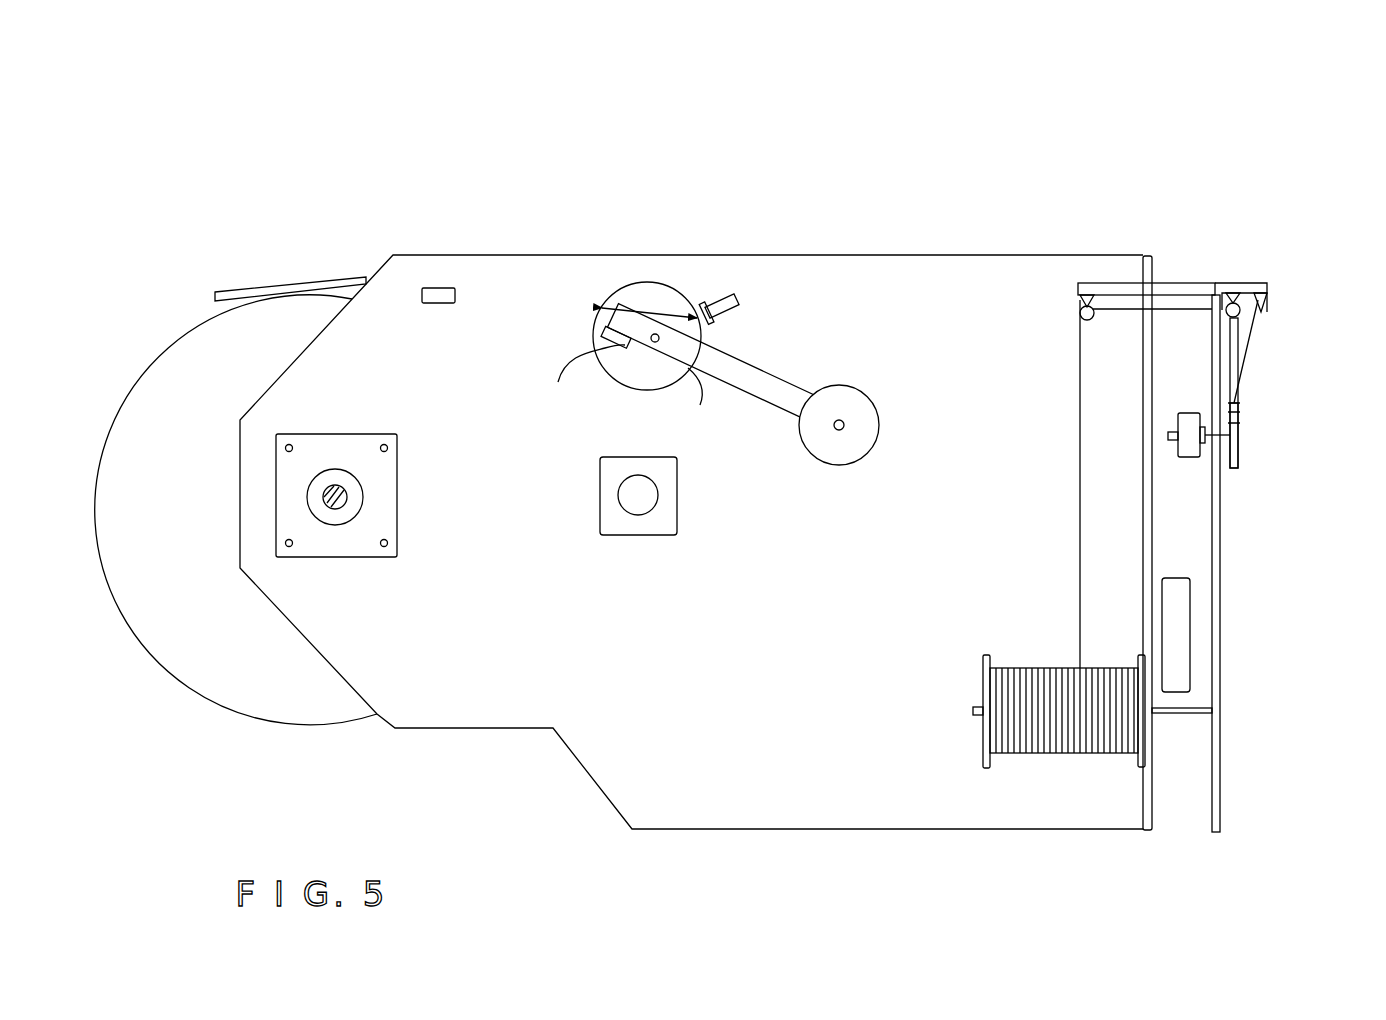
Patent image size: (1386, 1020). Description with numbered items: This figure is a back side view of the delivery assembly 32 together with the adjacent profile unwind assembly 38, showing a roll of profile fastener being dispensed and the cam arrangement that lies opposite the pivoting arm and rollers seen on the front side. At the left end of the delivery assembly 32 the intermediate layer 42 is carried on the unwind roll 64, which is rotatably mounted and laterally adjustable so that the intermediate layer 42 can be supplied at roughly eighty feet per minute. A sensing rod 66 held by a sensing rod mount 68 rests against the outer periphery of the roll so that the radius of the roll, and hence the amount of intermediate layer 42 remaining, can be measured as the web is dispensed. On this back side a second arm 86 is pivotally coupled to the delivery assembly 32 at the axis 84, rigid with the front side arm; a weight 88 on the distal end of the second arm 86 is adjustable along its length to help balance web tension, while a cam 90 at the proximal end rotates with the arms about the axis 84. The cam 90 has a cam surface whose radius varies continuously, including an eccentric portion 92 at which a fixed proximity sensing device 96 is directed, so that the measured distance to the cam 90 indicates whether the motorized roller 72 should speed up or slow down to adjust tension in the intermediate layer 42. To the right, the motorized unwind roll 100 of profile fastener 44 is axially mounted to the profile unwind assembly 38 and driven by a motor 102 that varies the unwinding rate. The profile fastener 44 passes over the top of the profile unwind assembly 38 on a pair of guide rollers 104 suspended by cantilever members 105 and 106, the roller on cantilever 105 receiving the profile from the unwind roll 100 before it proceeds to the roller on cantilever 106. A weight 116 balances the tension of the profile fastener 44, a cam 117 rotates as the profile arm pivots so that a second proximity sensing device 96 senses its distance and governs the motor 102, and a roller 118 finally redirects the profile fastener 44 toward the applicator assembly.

The delivery assembly 32 is at (562, 172).
The profile unwind assembly 38 is at (1236, 215).
The intermediate layer 42 is at (163, 523).
The profile fastener 44 is at (1250, 345).
The unwind roll 64 is at (345, 492).
The sensing rod 66 is at (225, 293).
The sensing rod mount 68 is at (445, 296).
The motorized roller 72 is at (648, 535).
The axis 84 is at (630, 397).
The second arm 86 is at (787, 390).
The weight 88 is at (852, 397).
The cam 90 is at (642, 303).
The eccentric portion 92 is at (652, 302).
The proximity sensing device 96 is at (737, 300).
The motorized unwind roll 100 is at (1147, 740).
The motor 102 is at (1180, 615).
The guide rollers 104 is at (1082, 320).
The cantilever member 105 is at (1163, 283).
The cantilever member 106 is at (1242, 283).
The weight 116 is at (1190, 457).
The cam 117 is at (1233, 432).
The roller 118 is at (1263, 317).